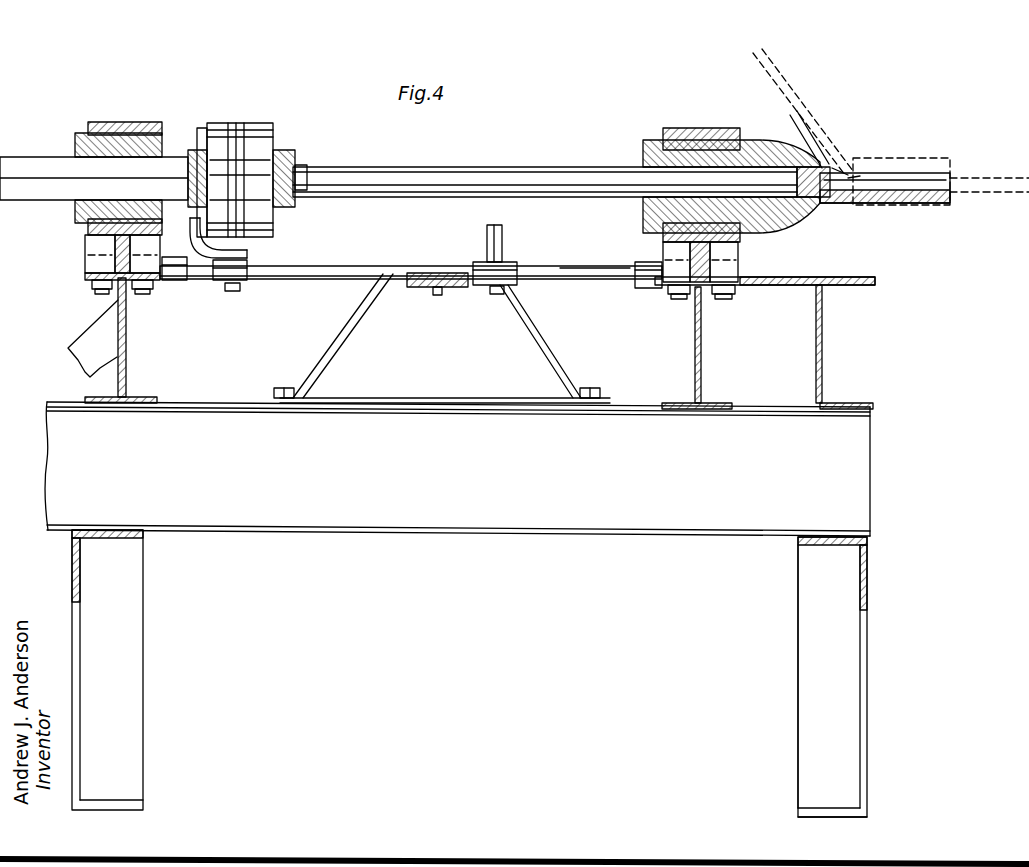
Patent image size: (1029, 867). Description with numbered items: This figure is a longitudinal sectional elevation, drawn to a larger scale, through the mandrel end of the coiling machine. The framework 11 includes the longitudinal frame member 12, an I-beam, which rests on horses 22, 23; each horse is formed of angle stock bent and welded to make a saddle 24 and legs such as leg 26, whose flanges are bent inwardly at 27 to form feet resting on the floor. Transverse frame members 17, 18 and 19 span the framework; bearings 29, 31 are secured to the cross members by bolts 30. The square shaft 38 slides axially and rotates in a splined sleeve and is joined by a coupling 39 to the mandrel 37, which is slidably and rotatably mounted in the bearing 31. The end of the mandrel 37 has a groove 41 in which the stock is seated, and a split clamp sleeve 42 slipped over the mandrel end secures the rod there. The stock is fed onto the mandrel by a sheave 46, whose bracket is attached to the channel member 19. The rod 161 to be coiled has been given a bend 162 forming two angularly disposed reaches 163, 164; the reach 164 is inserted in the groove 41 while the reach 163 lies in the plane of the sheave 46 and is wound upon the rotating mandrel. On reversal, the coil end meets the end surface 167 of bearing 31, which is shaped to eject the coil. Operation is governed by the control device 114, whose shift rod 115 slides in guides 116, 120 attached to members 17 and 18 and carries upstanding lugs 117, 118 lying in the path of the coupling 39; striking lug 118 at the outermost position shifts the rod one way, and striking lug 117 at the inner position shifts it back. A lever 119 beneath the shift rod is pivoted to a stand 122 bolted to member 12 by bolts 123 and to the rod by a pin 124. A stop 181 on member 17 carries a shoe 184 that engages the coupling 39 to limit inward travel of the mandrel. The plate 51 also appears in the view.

The framework 11 is at (870, 410).
The longitudinal frame member 12 is at (835, 480).
The transverse frame member 17 is at (127, 372).
The transverse frame member 18 is at (701, 383).
The transverse frame member 19 is at (823, 345).
The horse 22 is at (125, 685).
The horse 23 is at (862, 670).
The saddle 24 is at (822, 545).
The leg 26 is at (818, 678).
The feet 27 is at (815, 812).
The bearing 29 is at (118, 122).
The bolts 30 is at (95, 295).
The bearing 31 is at (688, 133).
The mandrel 37 is at (545, 178).
The square shaft 38 is at (20, 165).
The coupling 39 is at (256, 130).
The groove 41 is at (835, 200).
The split clamp sleeve 42 is at (900, 158).
The sheave 46 is at (790, 118).
The mounting plate 51 is at (838, 276).
The control device 114 is at (595, 266).
The shift rod 115 is at (353, 266).
The guide 116 is at (180, 277).
The lug 117 is at (166, 240).
The lug 118 is at (497, 236).
The lever 119 is at (455, 290).
The guide 120 is at (647, 282).
The stand 122 is at (345, 340).
The bolts 123 is at (283, 388).
The pin 124 is at (437, 272).
The rod 161 is at (1003, 193).
The bend 162 is at (855, 172).
The reach 163 is at (792, 88).
The reach 164 is at (973, 178).
The end surface 167 is at (848, 172).
The stop 181 is at (186, 248).
The shoe 184 is at (200, 128).